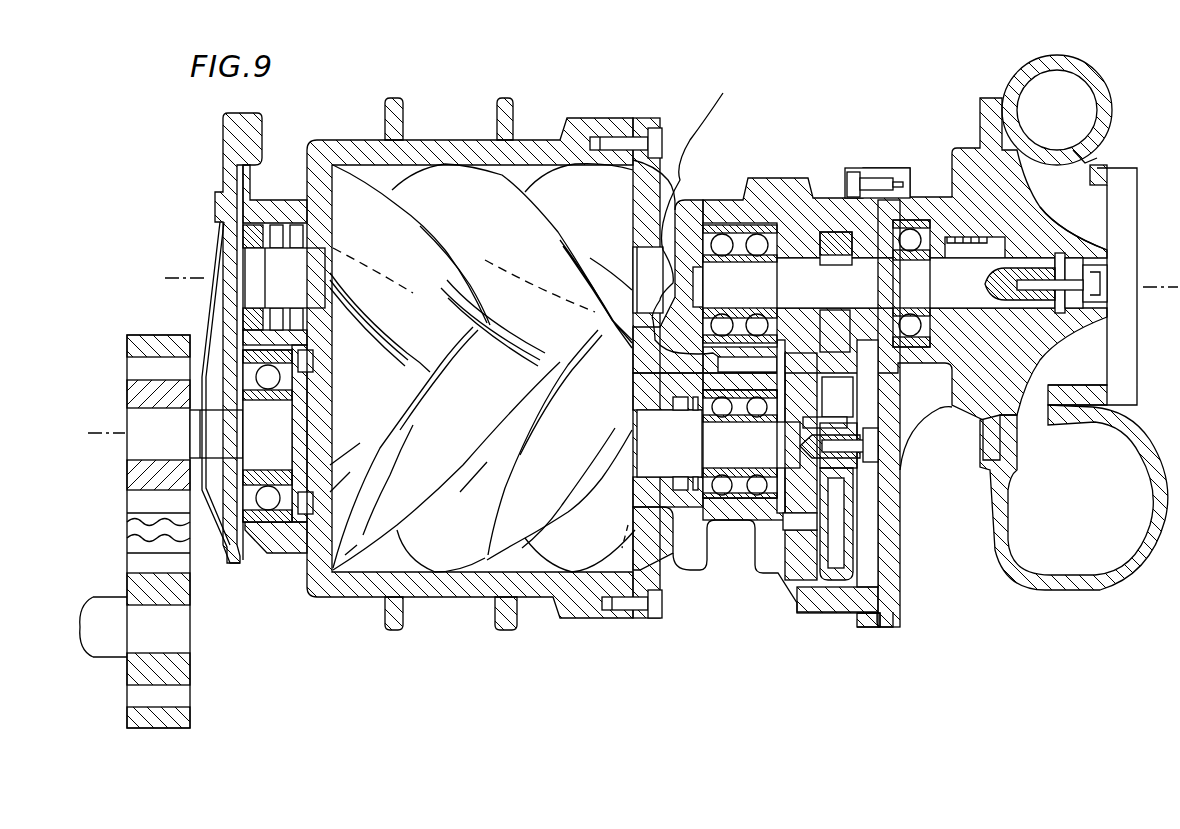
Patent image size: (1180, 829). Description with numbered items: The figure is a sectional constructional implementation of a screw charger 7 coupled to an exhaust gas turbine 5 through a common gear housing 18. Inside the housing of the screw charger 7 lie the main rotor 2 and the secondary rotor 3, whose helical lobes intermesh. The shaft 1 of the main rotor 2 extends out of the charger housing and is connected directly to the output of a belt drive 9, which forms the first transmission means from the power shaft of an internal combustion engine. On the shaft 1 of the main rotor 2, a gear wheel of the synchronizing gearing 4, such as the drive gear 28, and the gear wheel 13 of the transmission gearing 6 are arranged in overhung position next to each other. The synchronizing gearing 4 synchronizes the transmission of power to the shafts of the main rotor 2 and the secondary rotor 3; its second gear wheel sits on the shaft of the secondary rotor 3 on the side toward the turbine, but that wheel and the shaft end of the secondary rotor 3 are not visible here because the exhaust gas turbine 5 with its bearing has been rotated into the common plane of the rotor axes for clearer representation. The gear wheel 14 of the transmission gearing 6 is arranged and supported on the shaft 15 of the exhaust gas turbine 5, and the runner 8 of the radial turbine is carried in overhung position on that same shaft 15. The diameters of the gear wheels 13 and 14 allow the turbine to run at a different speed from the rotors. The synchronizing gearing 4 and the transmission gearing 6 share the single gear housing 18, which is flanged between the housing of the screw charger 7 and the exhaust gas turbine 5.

The shaft of main rotor 1 is at (150, 453).
The main rotor 2 is at (448, 558).
The secondary rotor 3 is at (467, 178).
The synchronizing gearing 4 is at (800, 363).
The exhaust gas turbine 5 is at (1050, 322).
The transmission gearing 6 is at (870, 362).
The screw charger 7 is at (425, 122).
The runner 8 is at (1097, 228).
The belt drive 9 is at (145, 540).
The gear wheel 13 is at (847, 540).
The gear wheel 14 is at (838, 245).
The shaft 15 is at (928, 270).
The gear housing 18 is at (890, 612).
The drive gear 28 is at (800, 527).